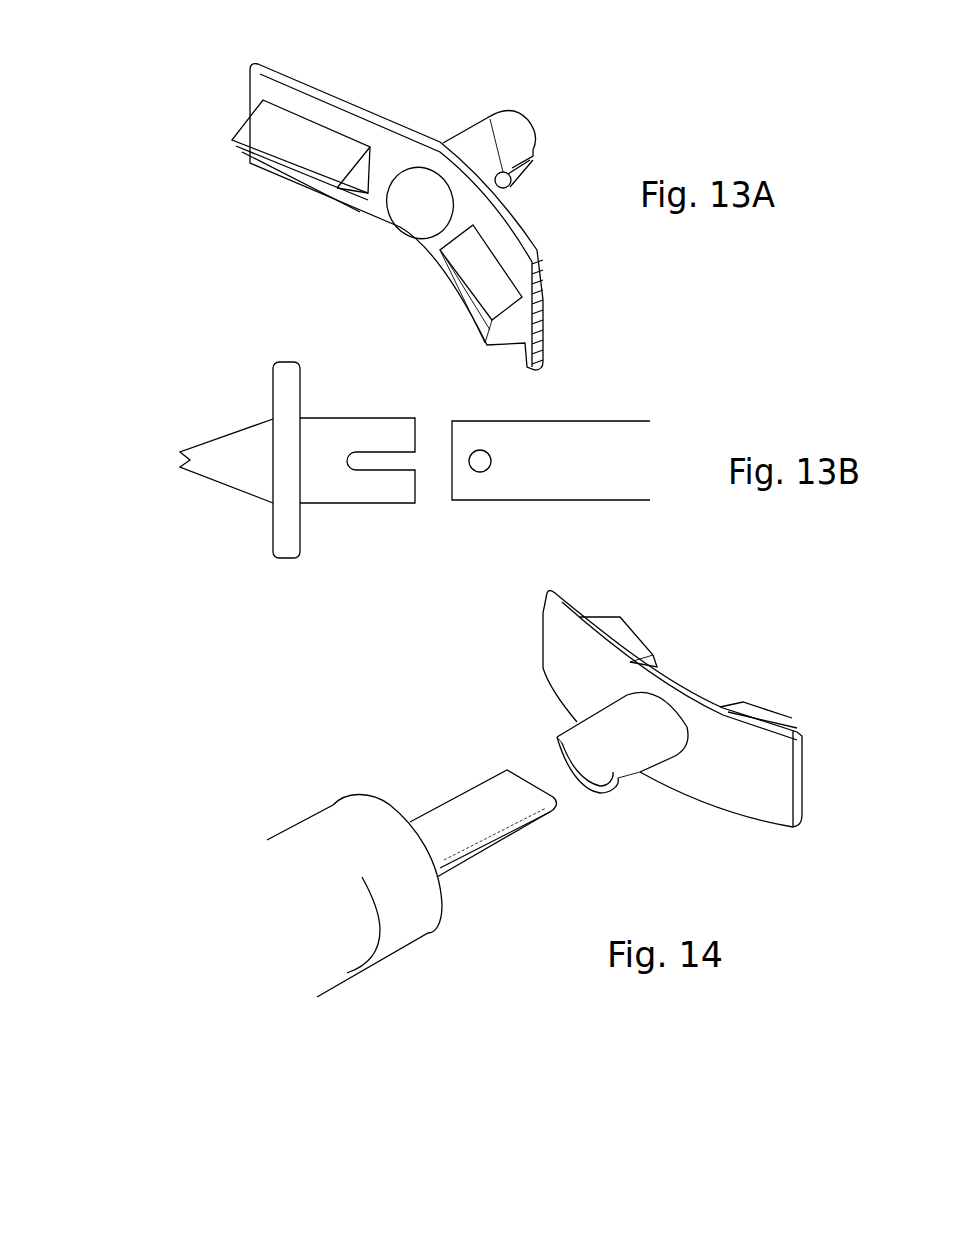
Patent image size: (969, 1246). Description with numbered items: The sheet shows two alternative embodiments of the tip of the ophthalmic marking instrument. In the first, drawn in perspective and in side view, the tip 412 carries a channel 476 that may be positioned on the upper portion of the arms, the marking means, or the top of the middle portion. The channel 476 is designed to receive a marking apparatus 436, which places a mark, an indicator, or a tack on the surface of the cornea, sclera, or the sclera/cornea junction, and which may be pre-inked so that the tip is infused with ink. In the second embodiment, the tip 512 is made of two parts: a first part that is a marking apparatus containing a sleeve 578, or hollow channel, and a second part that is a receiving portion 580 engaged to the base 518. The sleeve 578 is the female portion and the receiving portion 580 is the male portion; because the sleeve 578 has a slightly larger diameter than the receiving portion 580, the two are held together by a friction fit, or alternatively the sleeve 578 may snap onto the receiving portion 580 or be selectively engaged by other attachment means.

In FIG. 13A, the tip 412 is at (150, 105).
In FIG. 13B, the tip 412 is at (315, 587).
In FIG. 13A, the marking apparatus 436 is at (440, 68).
In FIG. 13B, the marking apparatus 436 is at (220, 368).
In FIG. 13A, the channel 476 is at (443, 274).
In FIG. 13B, the channel 476 is at (185, 458).
In FIG. 14, the tip 512 is at (585, 988).
In FIG. 14, the base 518 is at (320, 816).
In FIG. 14, the sleeve 578 is at (562, 750).
In FIG. 14, the receiving portion 580 is at (462, 801).